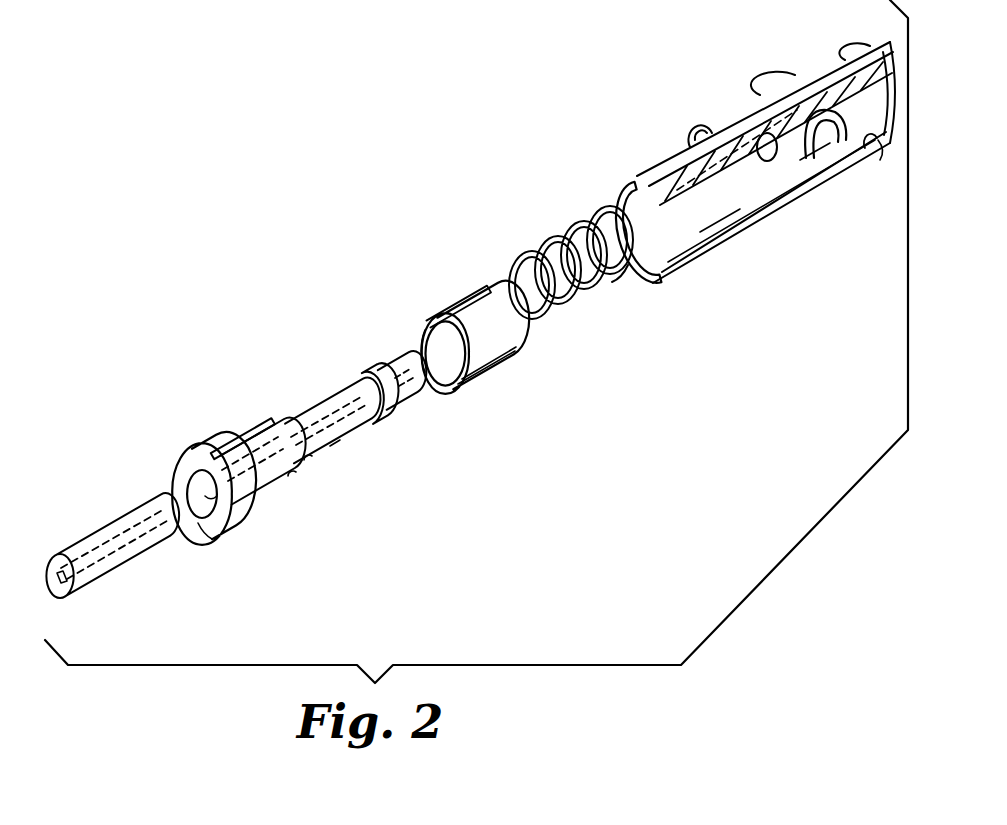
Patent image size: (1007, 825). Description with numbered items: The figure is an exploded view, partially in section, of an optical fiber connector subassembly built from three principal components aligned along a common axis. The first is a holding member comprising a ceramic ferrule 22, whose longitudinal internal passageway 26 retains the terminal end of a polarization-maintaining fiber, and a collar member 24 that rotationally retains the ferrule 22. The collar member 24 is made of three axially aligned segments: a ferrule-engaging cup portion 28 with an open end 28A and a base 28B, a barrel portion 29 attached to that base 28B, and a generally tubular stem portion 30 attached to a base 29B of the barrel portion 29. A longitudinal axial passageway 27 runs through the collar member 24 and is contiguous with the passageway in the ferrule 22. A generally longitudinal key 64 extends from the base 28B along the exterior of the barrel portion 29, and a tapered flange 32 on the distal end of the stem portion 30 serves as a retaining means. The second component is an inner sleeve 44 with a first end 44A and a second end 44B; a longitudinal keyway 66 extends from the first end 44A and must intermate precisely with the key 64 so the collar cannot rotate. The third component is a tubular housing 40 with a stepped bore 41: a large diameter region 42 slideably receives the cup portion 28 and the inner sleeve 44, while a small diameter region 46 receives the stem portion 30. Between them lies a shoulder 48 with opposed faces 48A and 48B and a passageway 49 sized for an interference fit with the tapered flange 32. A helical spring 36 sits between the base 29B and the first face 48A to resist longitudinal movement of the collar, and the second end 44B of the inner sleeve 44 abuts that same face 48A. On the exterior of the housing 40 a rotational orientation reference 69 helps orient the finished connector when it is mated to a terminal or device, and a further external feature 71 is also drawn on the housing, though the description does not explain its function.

The ferrule 22 is at (87, 537).
The longitudinal internal passageway 26 is at (108, 580).
The collar member 24 is at (297, 392).
The ferrule-engaging cup portion 28 is at (200, 450).
The open end 28A is at (205, 537).
The base 28B is at (255, 495).
The key 64 is at (252, 437).
The barrel portion 29 is at (292, 480).
The base of the barrel portion 29B is at (311, 461).
The stem portion 30 is at (328, 402).
The longitudinal axial passageway 27 is at (336, 452).
The tapered flange 32 is at (373, 370).
The inner sleeve member 44 is at (482, 297).
The first end 44A is at (419, 335).
The second end 44B is at (520, 330).
The keyway 66 is at (442, 317).
The helical spring 36 is at (516, 262).
The tubular housing 40 is at (733, 76).
The stepped bore 41 is at (654, 236).
The large diameter region 42 is at (725, 217).
The rotational orientation reference 69 is at (682, 150).
The boss 71 is at (770, 165).
The shoulder 48 is at (836, 128).
The first face 48A is at (815, 186).
The second face 48B is at (847, 68).
The small diameter region 46 is at (879, 156).
The passageway 49 is at (851, 170).